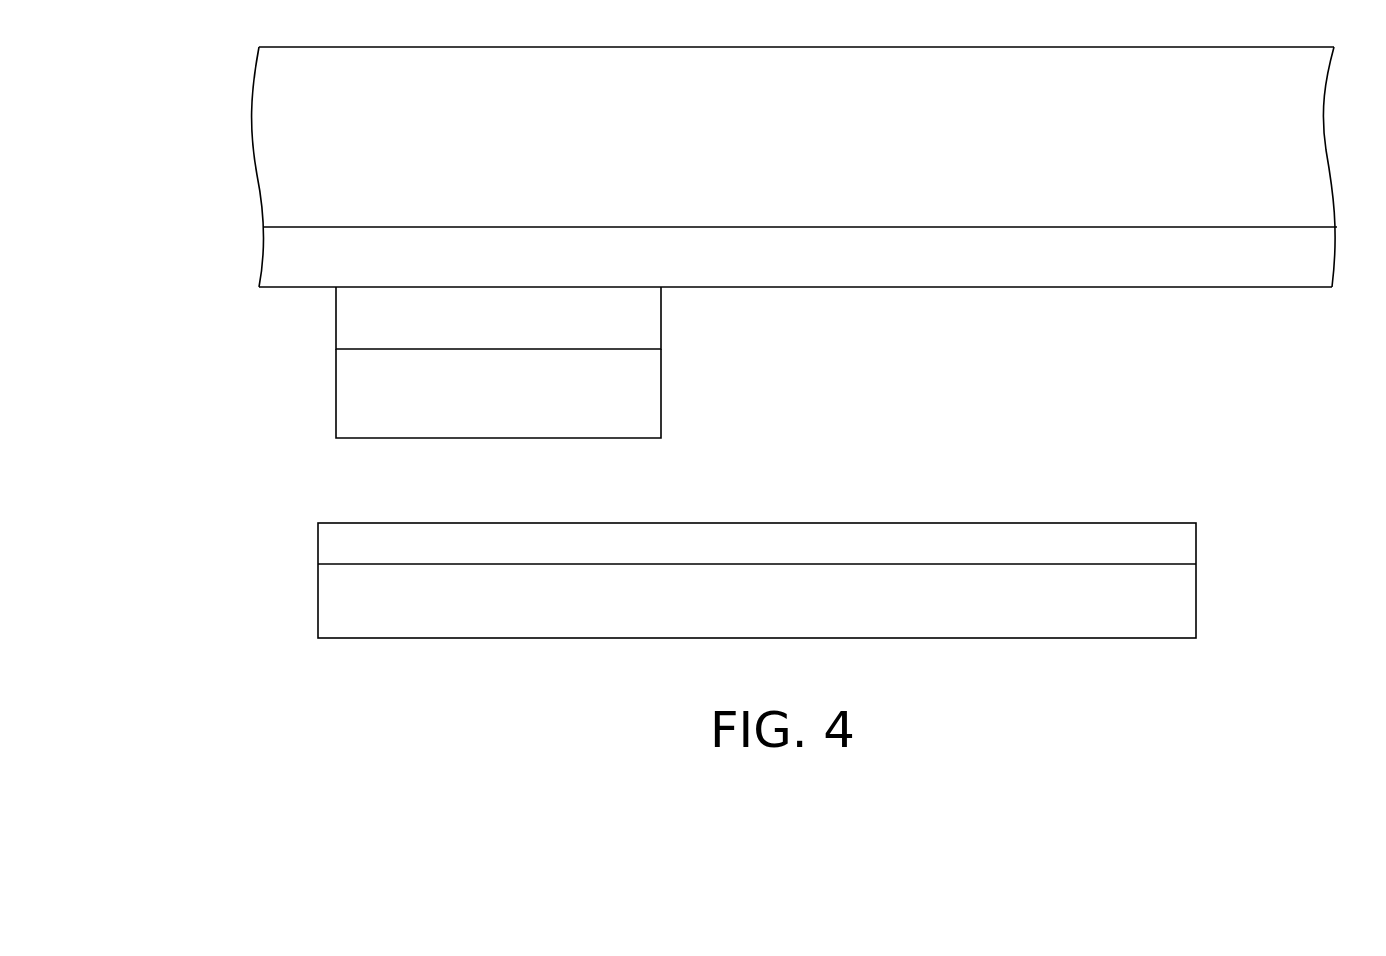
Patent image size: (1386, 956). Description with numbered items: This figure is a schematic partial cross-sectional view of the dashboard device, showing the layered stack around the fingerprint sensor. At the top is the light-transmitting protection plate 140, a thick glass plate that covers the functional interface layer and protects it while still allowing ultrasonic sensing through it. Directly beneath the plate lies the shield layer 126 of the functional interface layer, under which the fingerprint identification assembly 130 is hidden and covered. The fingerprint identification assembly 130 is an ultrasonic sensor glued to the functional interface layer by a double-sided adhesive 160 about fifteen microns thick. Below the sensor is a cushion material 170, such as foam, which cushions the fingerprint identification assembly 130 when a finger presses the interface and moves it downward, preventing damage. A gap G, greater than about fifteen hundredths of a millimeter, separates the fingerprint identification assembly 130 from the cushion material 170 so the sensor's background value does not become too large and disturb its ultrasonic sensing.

The light-transmitting protection plate 140 is at (273, 140).
The shield layer 126 is at (297, 258).
The double-sided adhesive 160 is at (368, 316).
The fingerprint identification assembly 130 is at (370, 393).
The gap G is at (367, 481).
The cushion material 170 is at (1163, 602).